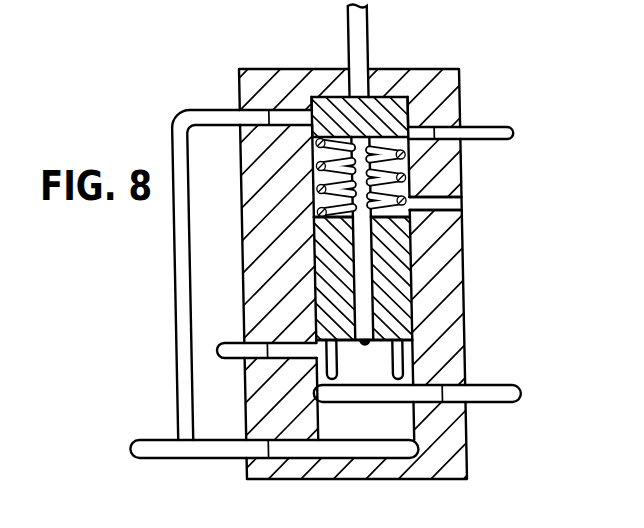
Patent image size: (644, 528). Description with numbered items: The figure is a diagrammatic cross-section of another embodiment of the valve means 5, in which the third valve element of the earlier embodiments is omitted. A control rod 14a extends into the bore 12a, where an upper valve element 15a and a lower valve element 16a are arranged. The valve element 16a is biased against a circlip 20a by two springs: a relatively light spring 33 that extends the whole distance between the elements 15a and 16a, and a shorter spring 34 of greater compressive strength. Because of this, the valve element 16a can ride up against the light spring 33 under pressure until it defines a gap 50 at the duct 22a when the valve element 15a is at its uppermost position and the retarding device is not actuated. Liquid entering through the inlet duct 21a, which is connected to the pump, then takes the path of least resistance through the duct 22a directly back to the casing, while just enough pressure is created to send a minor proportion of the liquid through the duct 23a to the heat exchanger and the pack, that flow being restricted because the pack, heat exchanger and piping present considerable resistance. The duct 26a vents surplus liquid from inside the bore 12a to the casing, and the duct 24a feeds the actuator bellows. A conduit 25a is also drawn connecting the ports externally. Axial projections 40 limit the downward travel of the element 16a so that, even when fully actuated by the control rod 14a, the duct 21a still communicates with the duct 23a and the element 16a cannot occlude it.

The valve means 5 is at (433, 76).
The control rod 14a is at (370, 28).
The valve element 15a is at (397, 107).
The bore 12a is at (303, 131).
The valve element 16a is at (393, 293).
The circlip 20a is at (399, 367).
The inlet duct 21a is at (210, 459).
The duct 22a is at (222, 342).
The duct 23a is at (478, 391).
The duct 24a is at (497, 126).
The bypass conduit 25a is at (172, 268).
The duct 26a is at (444, 207).
The spring 33 is at (330, 173).
The spring 34 is at (330, 200).
The axial projections 40 is at (401, 390).
The gap 50 is at (313, 350).